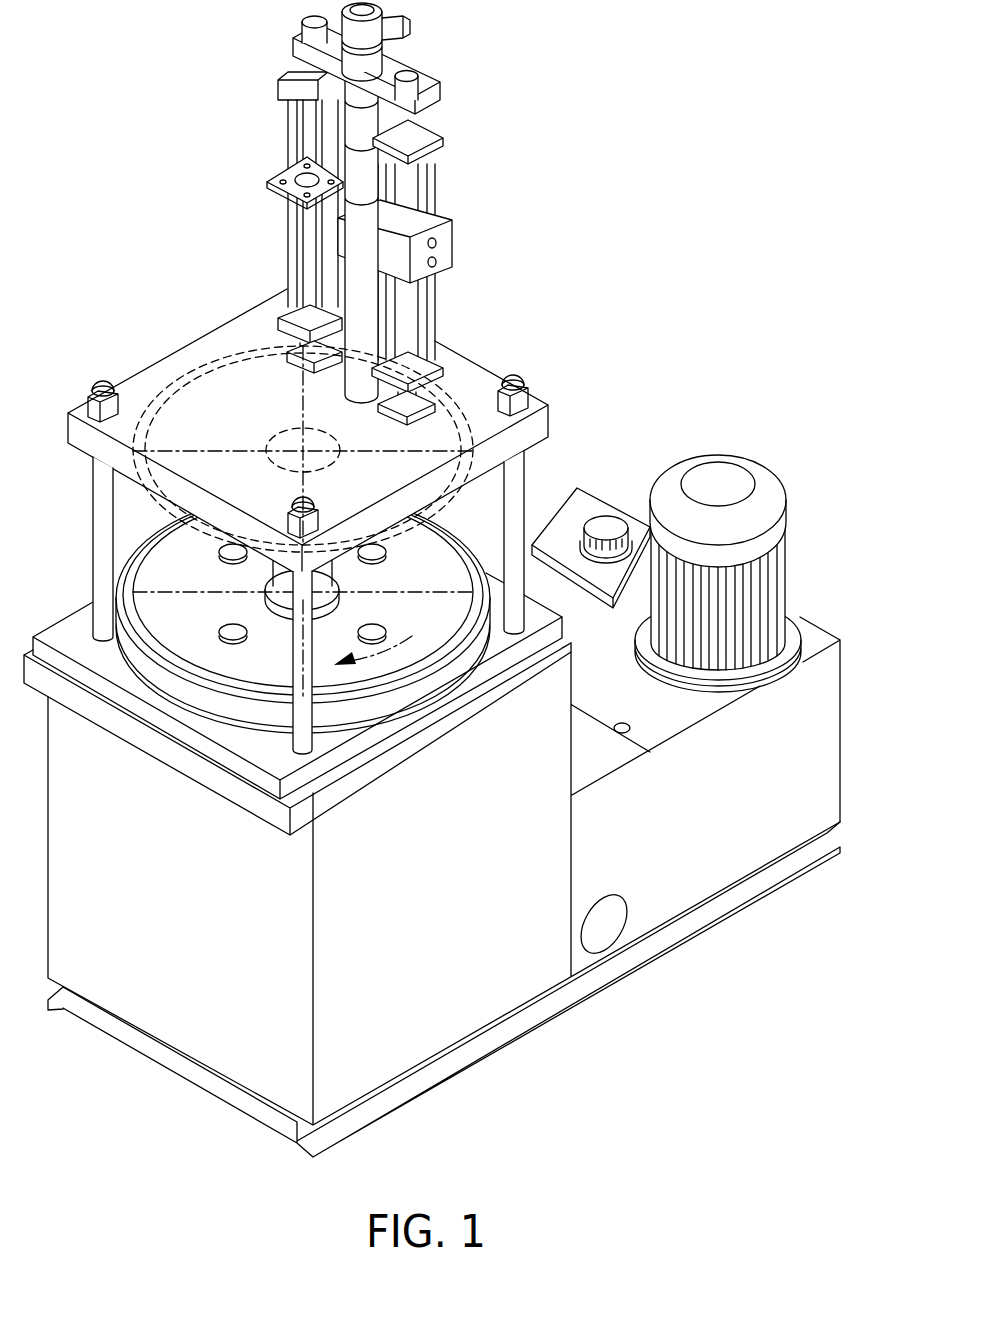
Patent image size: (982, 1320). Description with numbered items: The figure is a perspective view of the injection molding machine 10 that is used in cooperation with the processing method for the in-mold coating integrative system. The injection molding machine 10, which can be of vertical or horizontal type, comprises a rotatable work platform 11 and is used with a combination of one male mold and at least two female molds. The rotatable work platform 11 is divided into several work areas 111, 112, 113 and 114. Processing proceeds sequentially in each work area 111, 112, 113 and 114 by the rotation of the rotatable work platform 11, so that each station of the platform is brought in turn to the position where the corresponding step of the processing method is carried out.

The injection molding machine 10 is at (432, 806).
The rotatable work platform 11 is at (324, 531).
The work area 111 is at (437, 565).
The work area 112 is at (407, 648).
The work area 113 is at (198, 647).
The work area 114 is at (173, 553).